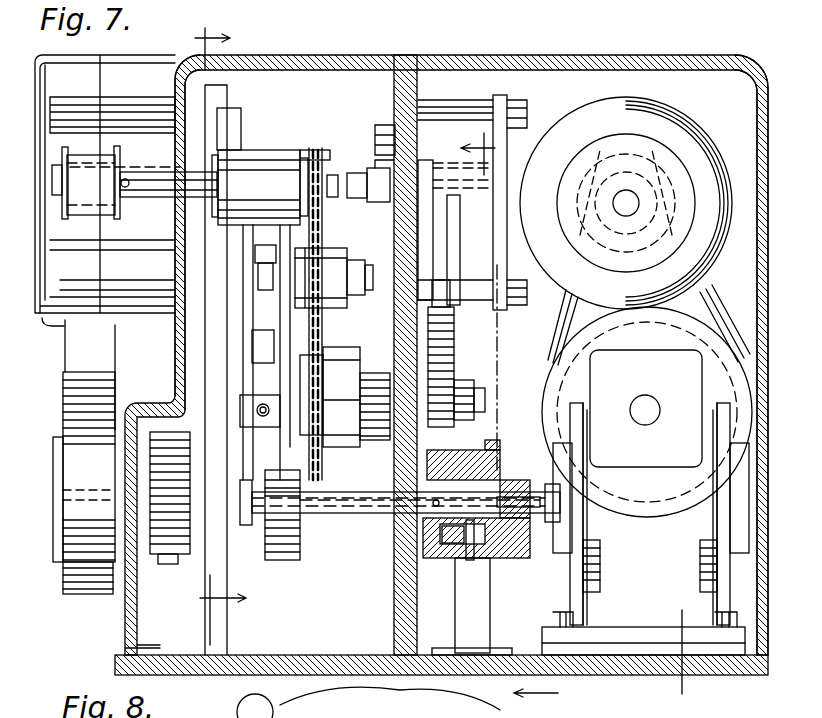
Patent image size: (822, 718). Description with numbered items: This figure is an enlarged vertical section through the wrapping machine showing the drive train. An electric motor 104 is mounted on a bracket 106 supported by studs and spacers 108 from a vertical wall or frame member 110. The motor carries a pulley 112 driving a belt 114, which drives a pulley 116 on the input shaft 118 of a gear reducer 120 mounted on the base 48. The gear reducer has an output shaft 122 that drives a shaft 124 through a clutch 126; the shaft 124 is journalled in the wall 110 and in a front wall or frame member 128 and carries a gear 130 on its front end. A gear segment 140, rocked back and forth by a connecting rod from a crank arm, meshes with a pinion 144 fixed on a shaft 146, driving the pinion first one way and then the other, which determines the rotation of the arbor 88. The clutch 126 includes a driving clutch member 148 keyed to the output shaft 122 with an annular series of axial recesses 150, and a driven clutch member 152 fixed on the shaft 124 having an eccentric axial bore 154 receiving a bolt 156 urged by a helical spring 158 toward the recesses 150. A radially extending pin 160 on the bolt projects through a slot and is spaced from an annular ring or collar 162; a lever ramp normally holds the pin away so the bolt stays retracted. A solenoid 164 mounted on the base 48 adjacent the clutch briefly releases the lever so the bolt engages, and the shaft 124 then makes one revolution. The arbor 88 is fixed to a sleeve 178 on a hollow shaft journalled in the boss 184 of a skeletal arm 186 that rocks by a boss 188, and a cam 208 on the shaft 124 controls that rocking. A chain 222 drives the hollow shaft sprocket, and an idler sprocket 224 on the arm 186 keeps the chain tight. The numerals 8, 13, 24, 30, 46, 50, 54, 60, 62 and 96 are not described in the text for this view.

The section line 8- 8 is at (514, 418).
The section line 13- 13 is at (220, 324).
The section line 24 is at (352, 163).
The motor unit 30 is at (70, 213).
The housing top wall 46 is at (460, 52).
The base 48 is at (630, 668).
The housing side wall 50 is at (620, 55).
The gear housing 54 is at (268, 58).
The gear 60 is at (52, 477).
The pinion 62 is at (77, 588).
The arbor 88 is at (55, 185).
The pin 96 is at (128, 180).
The electric motor 104 is at (686, 122).
The bracket 106 is at (540, 128).
The studs and spacers 108 is at (466, 108).
The vertical wall or frame member 110 is at (394, 90).
The pulley 112 is at (640, 185).
The belt 114 is at (712, 300).
The pulley 116 is at (718, 368).
The input shaft 118 is at (644, 422).
The gear reducer 120 is at (698, 663).
The output shaft 122 is at (572, 544).
The shaft 124 is at (322, 512).
The clutch 126 is at (505, 416).
The front wall or frame member 128 is at (160, 642).
The gear 130 is at (168, 505).
The gear segment 140 is at (455, 338).
The pinion 144 is at (458, 382).
The shaft 146 is at (408, 395).
The driving clutch member 148 is at (545, 570).
The axial recesses 150 is at (537, 640).
The driven clutch member 152 is at (430, 472).
The eccentric axial bore 154 is at (455, 545).
The bolt 156 is at (466, 550).
The helical spring 158 is at (425, 540).
The radially extending pin 160 is at (480, 560).
The annular ring or collar 162 is at (540, 410).
The solenoid 164 is at (455, 637).
The sleeve 178 is at (196, 171).
The boss 184 is at (262, 148).
The arm 186 is at (250, 285).
The boss 188 is at (257, 380).
The cam 208 is at (275, 556).
The chain 222 is at (323, 218).
The idler sprocket 224 is at (330, 238).